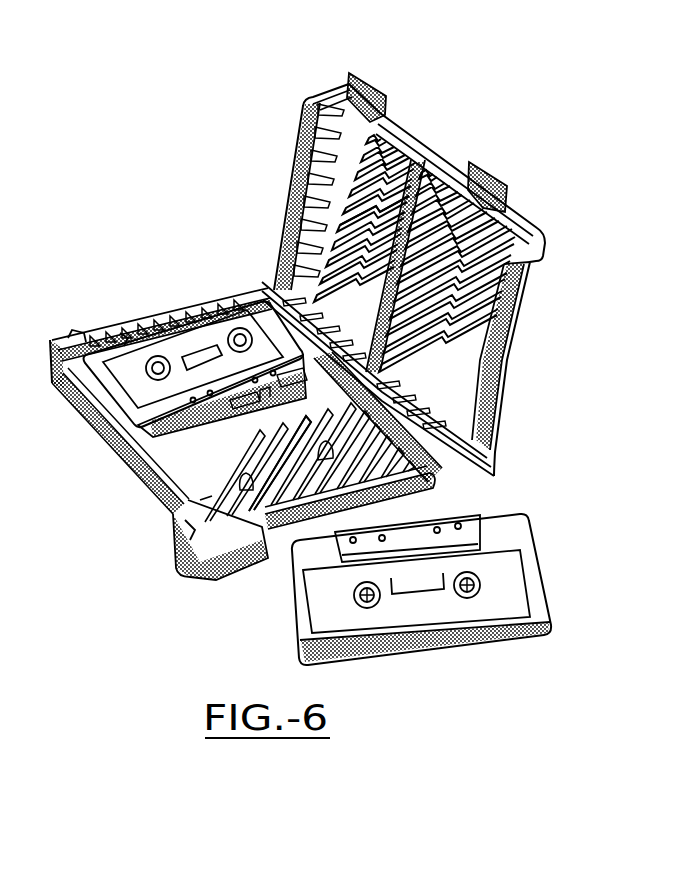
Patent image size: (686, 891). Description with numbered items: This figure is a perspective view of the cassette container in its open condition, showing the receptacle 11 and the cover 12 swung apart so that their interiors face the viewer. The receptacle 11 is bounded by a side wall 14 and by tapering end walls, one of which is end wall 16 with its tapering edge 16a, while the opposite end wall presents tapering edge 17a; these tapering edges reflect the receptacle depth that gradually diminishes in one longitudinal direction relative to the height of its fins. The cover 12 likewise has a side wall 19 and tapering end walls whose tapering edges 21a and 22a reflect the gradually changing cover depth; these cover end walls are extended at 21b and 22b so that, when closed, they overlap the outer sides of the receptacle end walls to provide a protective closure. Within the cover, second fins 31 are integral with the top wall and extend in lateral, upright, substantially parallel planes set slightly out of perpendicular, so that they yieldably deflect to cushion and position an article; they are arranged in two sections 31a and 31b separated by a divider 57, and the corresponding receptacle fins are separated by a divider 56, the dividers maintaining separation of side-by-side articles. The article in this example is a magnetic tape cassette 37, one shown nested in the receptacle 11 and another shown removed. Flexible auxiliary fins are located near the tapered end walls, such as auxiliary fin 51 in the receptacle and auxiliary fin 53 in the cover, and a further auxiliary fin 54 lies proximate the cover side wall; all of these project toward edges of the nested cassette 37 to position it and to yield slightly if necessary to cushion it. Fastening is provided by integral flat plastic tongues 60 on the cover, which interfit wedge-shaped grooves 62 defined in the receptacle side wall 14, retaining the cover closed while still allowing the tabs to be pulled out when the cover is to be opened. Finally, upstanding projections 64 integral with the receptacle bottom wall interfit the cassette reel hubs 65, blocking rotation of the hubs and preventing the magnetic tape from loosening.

The receptacle 11 is at (130, 495).
The cover 12 is at (545, 265).
The side wall 14 is at (150, 506).
The end wall 16 is at (428, 495).
The tapering edge 16a is at (244, 488).
The tapering edge 17a is at (133, 322).
The side wall 19 is at (426, 152).
The tapering edge 21a is at (500, 335).
The end wall extension 21b is at (528, 292).
The tapering edge 22a is at (318, 164).
The end wall extension 22b is at (306, 125).
The second fins 31 is at (368, 176).
The first section of second fins 31a is at (483, 252).
The second section of second fins 31b is at (370, 162).
The magnetic tape cassette 37 is at (216, 304).
The auxiliary fin 51 is at (76, 338).
The auxiliary fin 53 is at (326, 216).
The auxiliary fin 54 is at (432, 418).
The divider 56 is at (150, 441).
The divider 57 is at (432, 178).
The tongue 60 is at (356, 74).
The groove 62 is at (80, 390).
The upstanding projection 64 is at (206, 504).
The cassette reel hub 65 is at (472, 587).